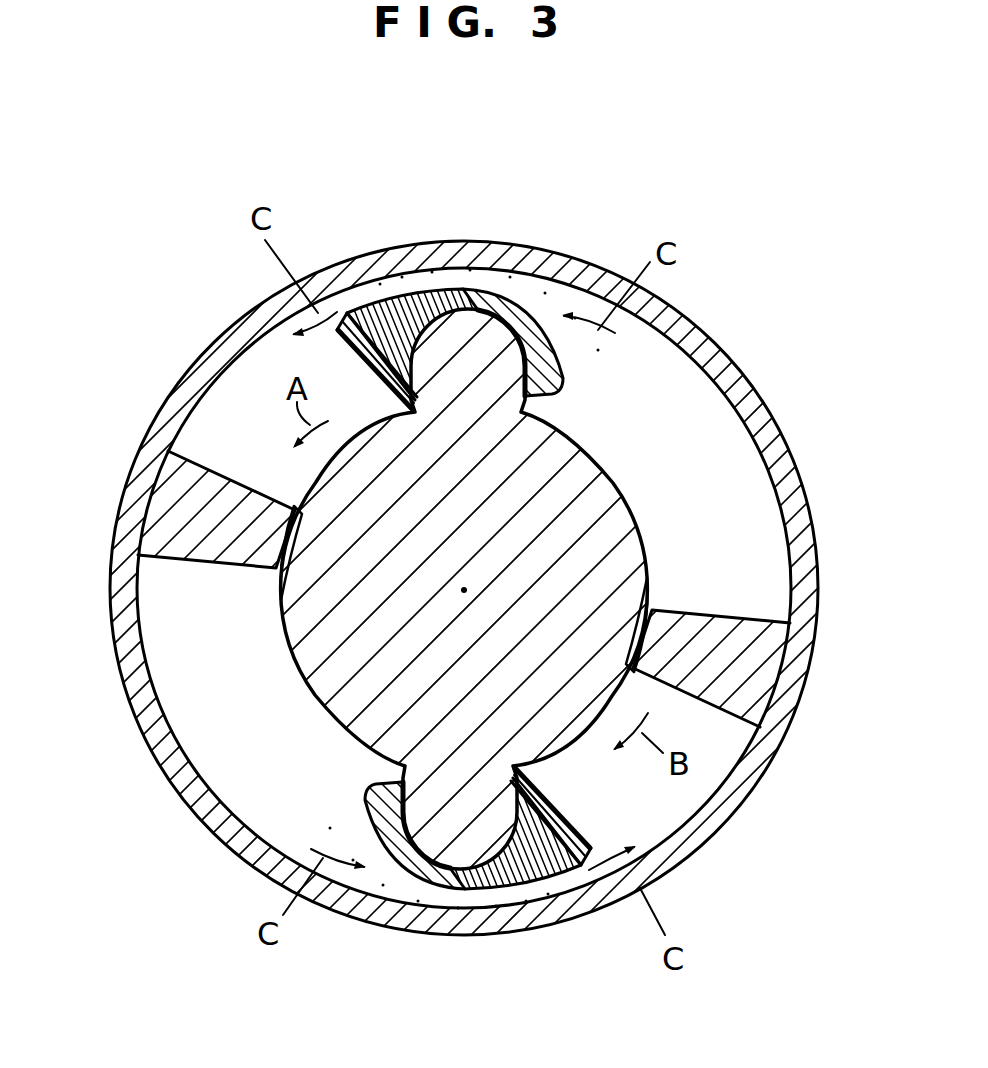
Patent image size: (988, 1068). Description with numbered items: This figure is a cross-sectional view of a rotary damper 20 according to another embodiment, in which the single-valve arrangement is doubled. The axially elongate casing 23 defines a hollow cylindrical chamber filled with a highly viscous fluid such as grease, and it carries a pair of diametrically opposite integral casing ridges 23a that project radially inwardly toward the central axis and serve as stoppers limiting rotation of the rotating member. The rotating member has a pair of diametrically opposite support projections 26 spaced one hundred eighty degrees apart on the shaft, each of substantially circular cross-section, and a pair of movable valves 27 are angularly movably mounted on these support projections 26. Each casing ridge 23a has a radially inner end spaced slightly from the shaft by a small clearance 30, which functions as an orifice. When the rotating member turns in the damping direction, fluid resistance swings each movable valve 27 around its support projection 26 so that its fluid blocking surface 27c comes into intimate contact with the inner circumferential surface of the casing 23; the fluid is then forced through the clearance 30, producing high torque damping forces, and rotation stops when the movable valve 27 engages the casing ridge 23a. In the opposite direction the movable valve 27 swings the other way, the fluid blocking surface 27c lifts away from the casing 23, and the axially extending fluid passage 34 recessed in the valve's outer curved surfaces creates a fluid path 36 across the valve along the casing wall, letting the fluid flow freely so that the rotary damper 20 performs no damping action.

The rotary damper 20 is at (736, 328).
The casing 23 is at (232, 850).
The casing ridge 23a is at (200, 520).
The support projection 26 is at (477, 367).
The movable valve 27 is at (447, 290).
The fluid blocking surface 27c is at (347, 317).
The clearance 30 is at (284, 594).
The fluid passage 34 is at (497, 280).
The fluid path 36 is at (373, 290).